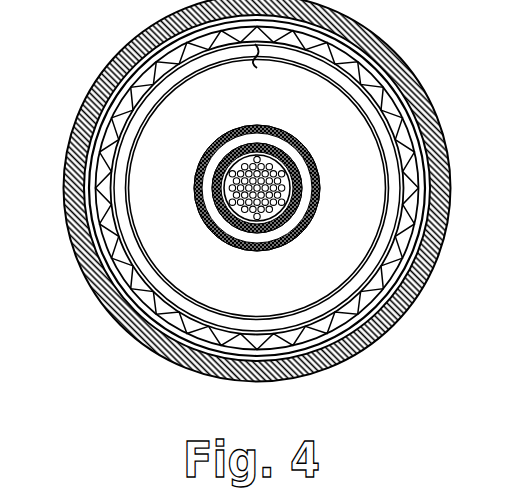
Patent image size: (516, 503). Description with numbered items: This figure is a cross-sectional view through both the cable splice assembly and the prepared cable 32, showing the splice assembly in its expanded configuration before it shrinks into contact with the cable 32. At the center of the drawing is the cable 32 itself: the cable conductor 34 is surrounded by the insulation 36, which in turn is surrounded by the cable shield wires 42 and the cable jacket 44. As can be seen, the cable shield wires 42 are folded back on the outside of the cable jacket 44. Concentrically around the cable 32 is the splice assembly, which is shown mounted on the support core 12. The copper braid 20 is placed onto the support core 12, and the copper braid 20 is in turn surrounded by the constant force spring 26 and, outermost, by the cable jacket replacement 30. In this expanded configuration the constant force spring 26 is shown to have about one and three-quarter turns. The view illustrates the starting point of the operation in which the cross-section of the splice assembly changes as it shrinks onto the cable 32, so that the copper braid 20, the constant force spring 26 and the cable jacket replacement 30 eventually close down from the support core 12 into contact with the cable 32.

The support core 12 is at (185, 293).
The copper braid 20 is at (125, 228).
The constant force spring 26 is at (445, 152).
The cable jacket replacement 30 is at (64, 181).
The cable 32 is at (281, 250).
The cable conductor 34 is at (269, 157).
The insulation 36 is at (293, 204).
The cable shield wires 42 is at (200, 163).
The cable jacket 44 is at (219, 220).